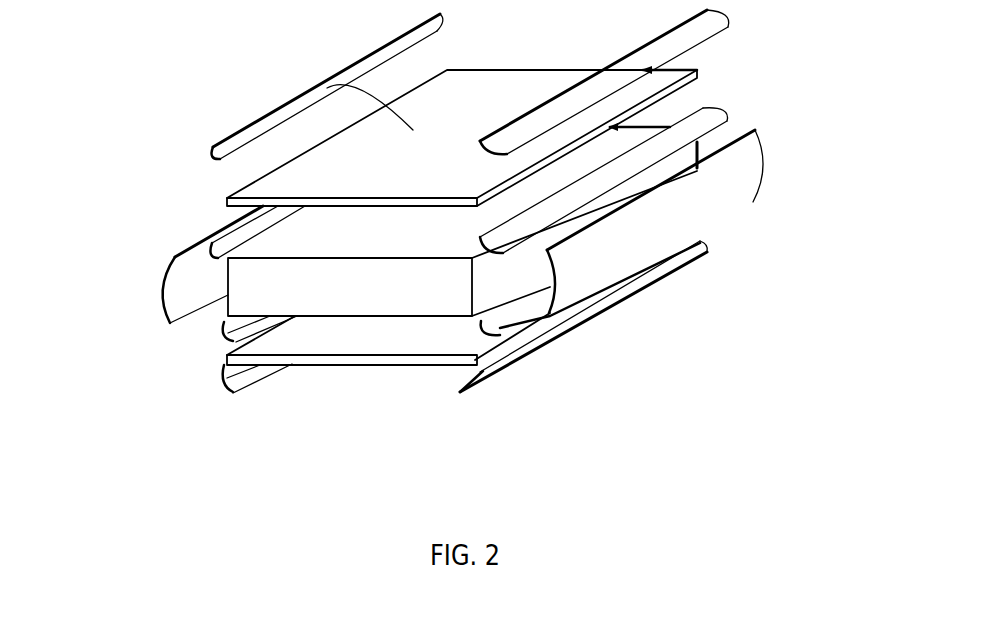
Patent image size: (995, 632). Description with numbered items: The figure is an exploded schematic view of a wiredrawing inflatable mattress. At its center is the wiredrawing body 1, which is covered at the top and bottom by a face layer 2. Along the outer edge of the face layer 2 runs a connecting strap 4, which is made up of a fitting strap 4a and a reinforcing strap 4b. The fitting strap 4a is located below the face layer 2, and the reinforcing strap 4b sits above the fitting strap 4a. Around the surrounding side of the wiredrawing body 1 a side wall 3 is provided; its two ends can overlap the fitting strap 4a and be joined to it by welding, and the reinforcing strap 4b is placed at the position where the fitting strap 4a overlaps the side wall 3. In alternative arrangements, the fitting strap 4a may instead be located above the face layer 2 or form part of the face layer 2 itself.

The wiredrawing body 1 is at (350, 287).
The face layer 2 is at (288, 100).
The side wall 3 is at (633, 237).
The connecting strap 4 is at (226, 332).
The fitting strap 4a is at (697, 143).
The reinforcing strap 4b is at (697, 77).